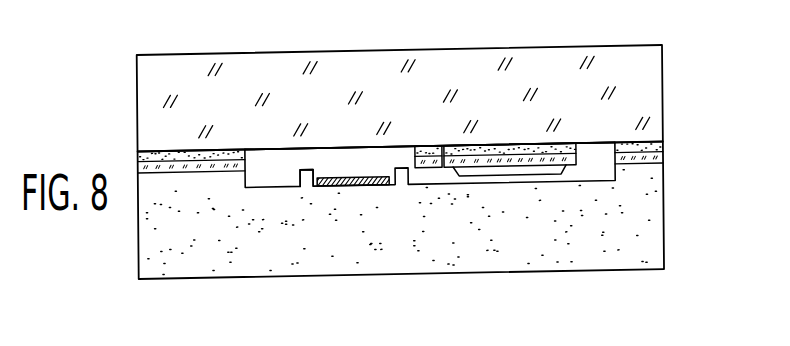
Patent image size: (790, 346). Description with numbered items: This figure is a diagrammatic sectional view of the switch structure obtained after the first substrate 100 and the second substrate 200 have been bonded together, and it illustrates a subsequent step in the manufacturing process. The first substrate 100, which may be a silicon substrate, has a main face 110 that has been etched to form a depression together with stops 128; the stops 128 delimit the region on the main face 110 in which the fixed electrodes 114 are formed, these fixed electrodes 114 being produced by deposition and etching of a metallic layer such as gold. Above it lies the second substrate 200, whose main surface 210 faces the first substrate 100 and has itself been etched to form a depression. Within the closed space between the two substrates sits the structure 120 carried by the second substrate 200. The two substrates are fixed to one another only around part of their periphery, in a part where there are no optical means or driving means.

The first substrate 100 is at (652, 210).
The main face 110 is at (278, 180).
The fixed electrodes 114 is at (374, 186).
The island structure 120 is at (561, 140).
The stops 128 is at (303, 172).
The second substrate 200 is at (667, 86).
The main surface 210 is at (360, 150).